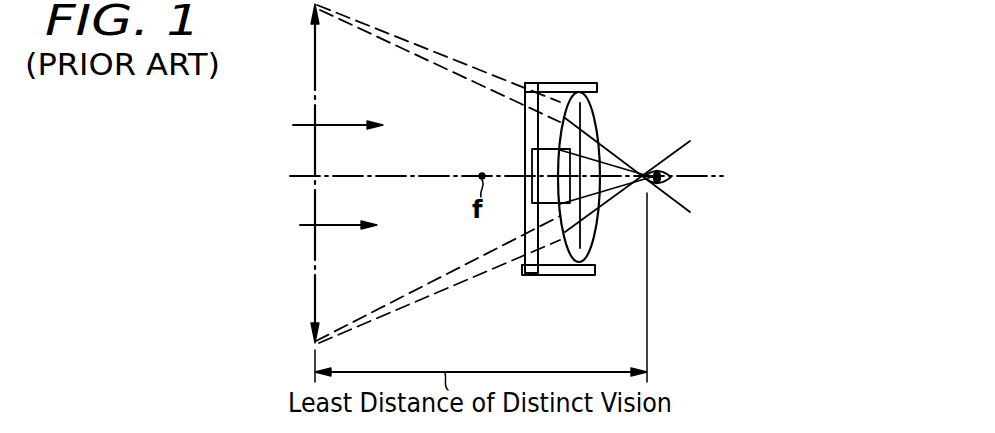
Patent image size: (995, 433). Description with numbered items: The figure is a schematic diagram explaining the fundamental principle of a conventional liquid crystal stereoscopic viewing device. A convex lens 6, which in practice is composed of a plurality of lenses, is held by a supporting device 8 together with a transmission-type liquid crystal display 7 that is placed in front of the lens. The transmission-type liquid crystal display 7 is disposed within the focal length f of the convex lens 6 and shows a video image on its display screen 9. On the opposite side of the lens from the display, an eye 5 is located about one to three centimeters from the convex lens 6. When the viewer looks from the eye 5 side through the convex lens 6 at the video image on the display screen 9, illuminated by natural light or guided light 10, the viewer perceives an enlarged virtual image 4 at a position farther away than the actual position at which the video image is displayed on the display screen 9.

The virtual image 4 is at (315, 78).
The eye 5 is at (657, 184).
The convex lens 6 is at (598, 113).
The transmission-type liquid crystal display 7 is at (536, 83).
The supporting device 8 is at (597, 84).
The display screen 9 is at (530, 164).
The natural light or guided light 10 is at (331, 226).